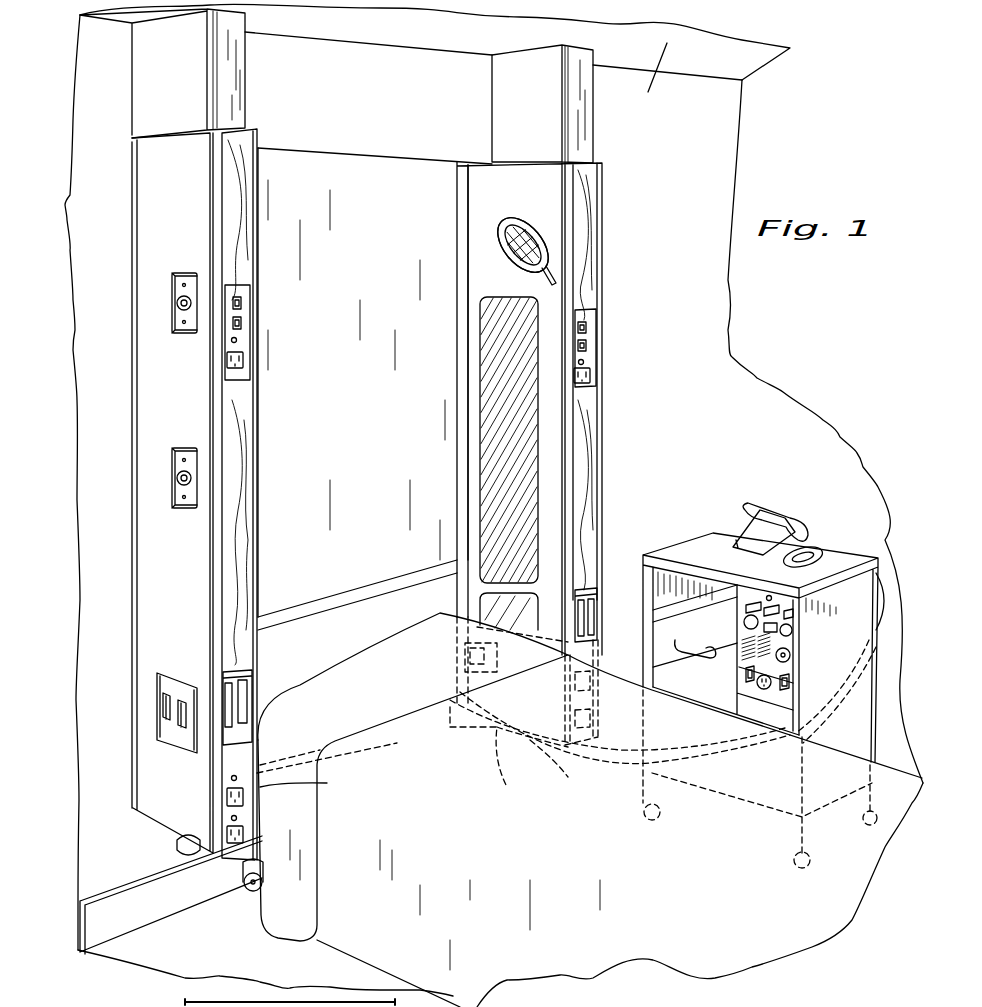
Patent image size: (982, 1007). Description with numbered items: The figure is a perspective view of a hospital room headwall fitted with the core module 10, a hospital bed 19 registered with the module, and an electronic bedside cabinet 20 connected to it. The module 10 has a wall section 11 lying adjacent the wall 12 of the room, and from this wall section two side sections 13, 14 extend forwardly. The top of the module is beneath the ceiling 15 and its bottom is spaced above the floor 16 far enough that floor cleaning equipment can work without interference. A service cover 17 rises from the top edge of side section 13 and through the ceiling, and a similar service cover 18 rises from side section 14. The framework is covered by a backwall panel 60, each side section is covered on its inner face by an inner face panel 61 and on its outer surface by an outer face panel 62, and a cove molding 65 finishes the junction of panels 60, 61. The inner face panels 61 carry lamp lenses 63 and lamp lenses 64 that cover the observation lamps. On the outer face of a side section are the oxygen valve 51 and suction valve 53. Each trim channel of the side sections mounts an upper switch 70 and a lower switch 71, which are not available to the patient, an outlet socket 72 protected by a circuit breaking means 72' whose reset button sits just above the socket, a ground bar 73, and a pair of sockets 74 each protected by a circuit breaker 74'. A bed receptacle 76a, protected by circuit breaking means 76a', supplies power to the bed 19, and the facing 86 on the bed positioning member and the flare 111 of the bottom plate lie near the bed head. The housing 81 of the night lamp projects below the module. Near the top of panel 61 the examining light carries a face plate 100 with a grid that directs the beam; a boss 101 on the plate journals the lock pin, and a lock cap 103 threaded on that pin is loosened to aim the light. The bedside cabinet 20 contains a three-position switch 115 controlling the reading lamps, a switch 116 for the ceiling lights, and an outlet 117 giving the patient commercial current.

The core module 10 is at (329, 142).
The wall section 11 is at (384, 150).
The wall 12 is at (493, 123).
The side section 13 is at (480, 177).
The side section 14 is at (249, 134).
The ceiling 15 is at (662, 74).
The floor 16 is at (295, 963).
The service cover 17 is at (505, 90).
The service cover 18 is at (242, 72).
The bed 19 is at (590, 810).
The electronic bedside cabinet 20 is at (689, 547).
The oxygen valve 51 is at (172, 305).
The suction valve 53 is at (175, 482).
The backwall panel 60 is at (351, 382).
The inner face panel 61 is at (529, 408).
The outer face panel 62 is at (172, 493).
The lamp lens 63 is at (490, 395).
The lamp lens 64 is at (477, 605).
The cove molding 65 is at (458, 251).
The upper switch 70 is at (241, 302).
The lower switch 71 is at (241, 323).
The circuit breaking means 72' is at (460, 345).
The outlet socket 72 is at (442, 371).
The ground bar 73 is at (240, 710).
The socket 74 is at (433, 776).
The circuit breaker 74' is at (399, 771).
The receptacle 76a is at (452, 657).
The circuit breaking means 76a' is at (449, 641).
The housing 81 is at (178, 847).
The facing 86 is at (414, 758).
The face plate 100 is at (498, 228).
The boss 101 is at (547, 268).
The lock cap 103 is at (556, 283).
The flare 111 is at (395, 746).
The switch 115 is at (745, 672).
The switch 116 is at (790, 682).
The outlet 117 is at (771, 690).